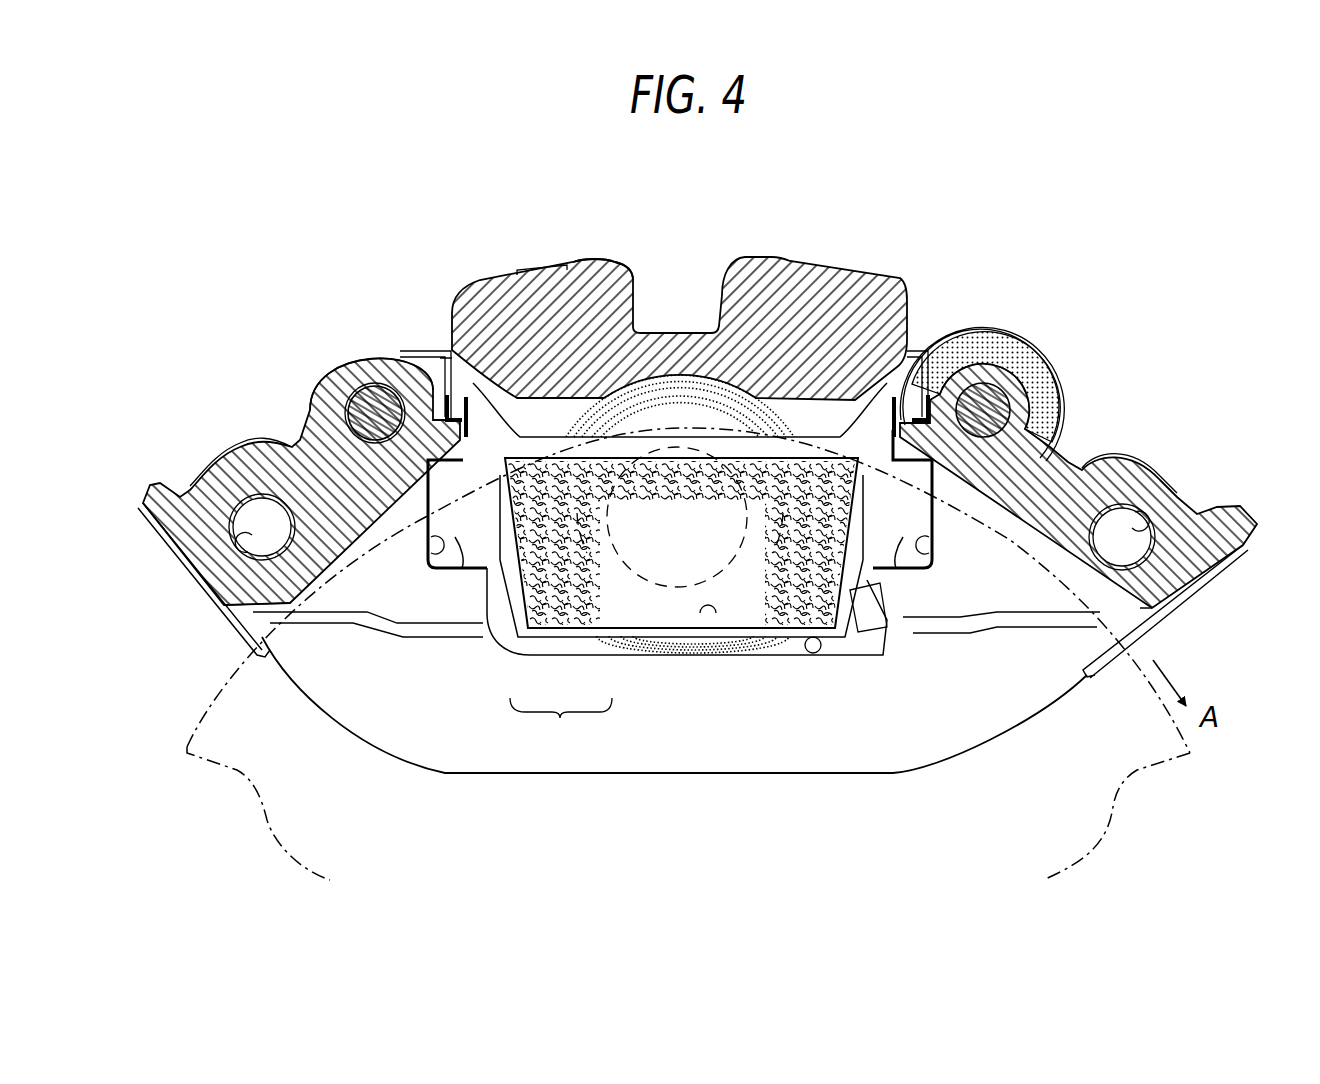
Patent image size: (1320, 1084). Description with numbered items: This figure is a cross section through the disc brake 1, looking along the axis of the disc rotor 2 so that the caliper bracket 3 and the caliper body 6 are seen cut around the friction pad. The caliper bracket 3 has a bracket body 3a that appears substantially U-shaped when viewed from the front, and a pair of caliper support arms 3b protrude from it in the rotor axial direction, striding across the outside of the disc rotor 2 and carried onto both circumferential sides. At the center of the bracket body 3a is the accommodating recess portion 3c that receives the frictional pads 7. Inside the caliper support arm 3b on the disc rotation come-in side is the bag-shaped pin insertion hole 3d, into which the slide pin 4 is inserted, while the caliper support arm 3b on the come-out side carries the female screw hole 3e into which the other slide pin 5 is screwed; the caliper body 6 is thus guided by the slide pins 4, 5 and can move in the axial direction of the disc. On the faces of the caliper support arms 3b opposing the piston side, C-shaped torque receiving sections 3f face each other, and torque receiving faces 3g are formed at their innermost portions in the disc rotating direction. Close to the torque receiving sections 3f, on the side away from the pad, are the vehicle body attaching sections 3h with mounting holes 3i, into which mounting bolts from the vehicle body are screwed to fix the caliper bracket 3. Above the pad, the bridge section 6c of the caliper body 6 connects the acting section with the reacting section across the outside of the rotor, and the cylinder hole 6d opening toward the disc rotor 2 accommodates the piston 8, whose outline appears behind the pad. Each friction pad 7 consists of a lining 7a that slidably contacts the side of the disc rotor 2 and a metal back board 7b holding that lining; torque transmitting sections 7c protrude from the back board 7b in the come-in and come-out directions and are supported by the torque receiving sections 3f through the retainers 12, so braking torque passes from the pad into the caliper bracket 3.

The disc brake 1 is at (946, 199).
The disc rotor 2 is at (225, 698).
The caliper bracket 3 is at (648, 790).
The bracket body 3a is at (755, 774).
The caliper support arms 3b is at (342, 372).
The accommodating recess portion 3c is at (810, 654).
The pin insertion hole 3d is at (364, 392).
The female screw hole 3e is at (977, 388).
The torque receiving sections 3f is at (447, 513).
The torque receiving faces 3g is at (428, 547).
The vehicle body attaching sections 3h is at (244, 468).
The mounting holes 3i is at (248, 545).
The slide pin 4 is at (308, 394).
The slide pin 5 is at (1000, 410).
The caliper body 6 is at (790, 243).
The bridge section 6c is at (598, 272).
The cylinder hole 6d is at (710, 650).
The frictional pads 7 is at (561, 724).
The lining 7a is at (585, 637).
The back board 7b is at (545, 638).
The torque transmitting sections 7c is at (445, 572).
The piston 8 is at (603, 542).
The retainers 12 is at (449, 405).